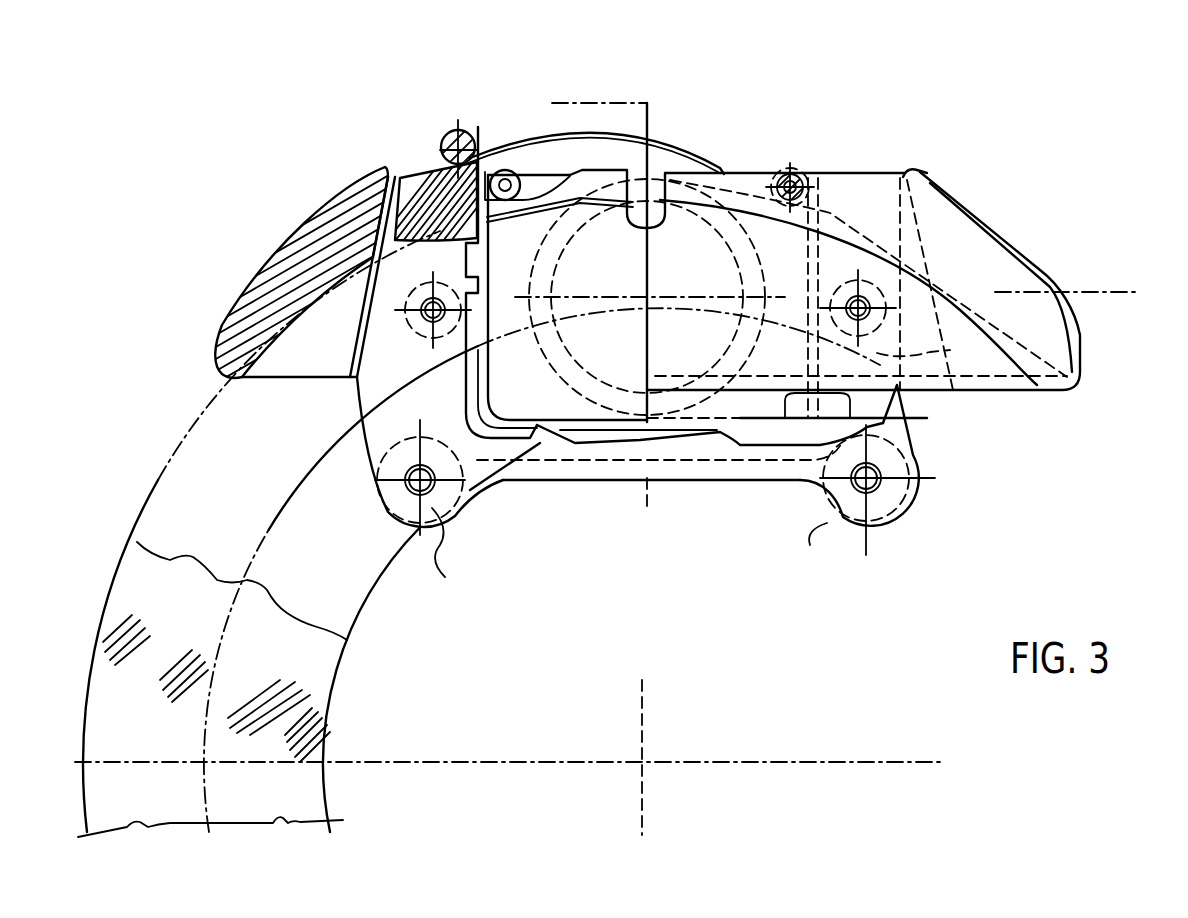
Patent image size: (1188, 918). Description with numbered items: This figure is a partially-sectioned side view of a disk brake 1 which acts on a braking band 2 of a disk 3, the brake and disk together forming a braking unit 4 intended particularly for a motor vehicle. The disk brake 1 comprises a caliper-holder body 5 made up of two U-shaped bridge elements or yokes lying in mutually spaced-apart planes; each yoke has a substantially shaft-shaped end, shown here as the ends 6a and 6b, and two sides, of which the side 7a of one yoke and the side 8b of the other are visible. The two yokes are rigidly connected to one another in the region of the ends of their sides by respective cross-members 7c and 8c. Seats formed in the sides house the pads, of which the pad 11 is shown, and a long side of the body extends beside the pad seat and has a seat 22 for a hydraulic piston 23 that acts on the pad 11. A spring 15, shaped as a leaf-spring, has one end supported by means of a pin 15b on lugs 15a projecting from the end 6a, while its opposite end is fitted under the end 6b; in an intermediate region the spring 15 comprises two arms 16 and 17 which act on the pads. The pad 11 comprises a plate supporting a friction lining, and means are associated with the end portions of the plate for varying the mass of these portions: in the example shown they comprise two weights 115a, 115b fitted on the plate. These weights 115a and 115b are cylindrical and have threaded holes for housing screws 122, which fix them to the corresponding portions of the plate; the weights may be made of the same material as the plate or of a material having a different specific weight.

The disk brake 1 is at (1012, 180).
The braking band 2 is at (140, 568).
The disk 3 is at (300, 670).
The braking unit 4 is at (308, 198).
The caliper-holder body 5 is at (740, 483).
The shaft-shaped end 6a is at (420, 203).
The shaft-shaped end 6b is at (817, 177).
The side 7a is at (377, 385).
The cross-member 7c is at (608, 470).
The side 8b is at (861, 359).
The cross-member 8c is at (703, 433).
The pad 11 is at (607, 170).
The spring 15 is at (720, 168).
The lugs 15a is at (453, 160).
The pin 15b is at (464, 140).
The arm 16 is at (782, 185).
The arm 17 is at (775, 183).
The seat 22 is at (580, 367).
The hydraulic piston 23 is at (578, 240).
The weight 115a is at (520, 172).
The weight 115b is at (800, 177).
The screws 122 is at (512, 178).